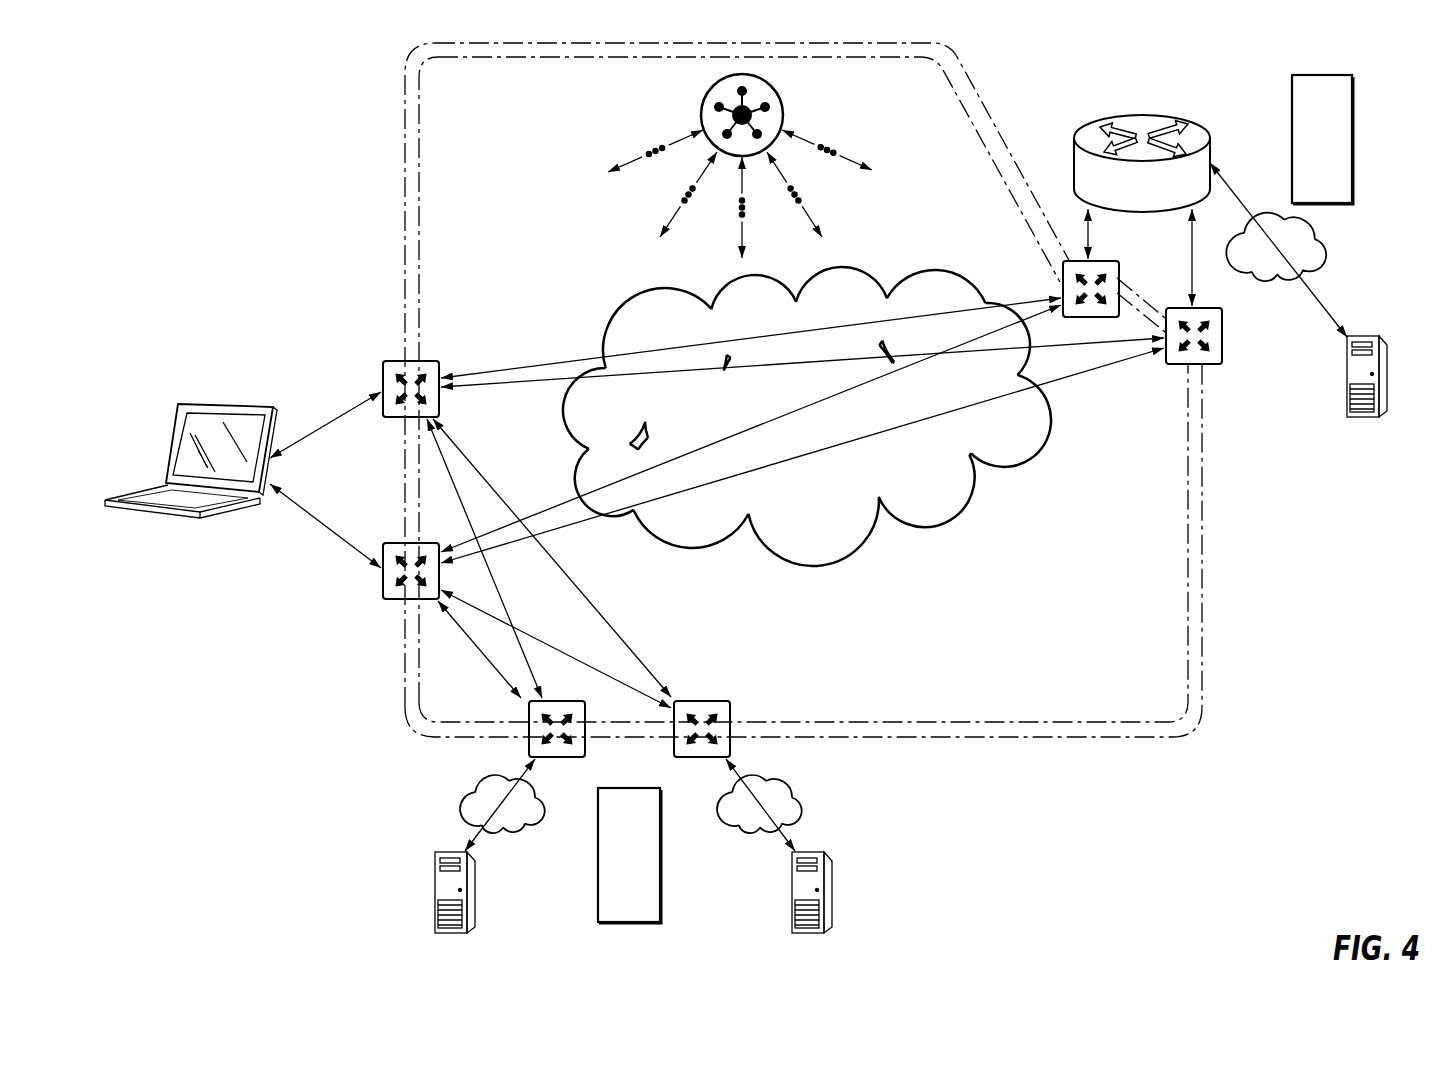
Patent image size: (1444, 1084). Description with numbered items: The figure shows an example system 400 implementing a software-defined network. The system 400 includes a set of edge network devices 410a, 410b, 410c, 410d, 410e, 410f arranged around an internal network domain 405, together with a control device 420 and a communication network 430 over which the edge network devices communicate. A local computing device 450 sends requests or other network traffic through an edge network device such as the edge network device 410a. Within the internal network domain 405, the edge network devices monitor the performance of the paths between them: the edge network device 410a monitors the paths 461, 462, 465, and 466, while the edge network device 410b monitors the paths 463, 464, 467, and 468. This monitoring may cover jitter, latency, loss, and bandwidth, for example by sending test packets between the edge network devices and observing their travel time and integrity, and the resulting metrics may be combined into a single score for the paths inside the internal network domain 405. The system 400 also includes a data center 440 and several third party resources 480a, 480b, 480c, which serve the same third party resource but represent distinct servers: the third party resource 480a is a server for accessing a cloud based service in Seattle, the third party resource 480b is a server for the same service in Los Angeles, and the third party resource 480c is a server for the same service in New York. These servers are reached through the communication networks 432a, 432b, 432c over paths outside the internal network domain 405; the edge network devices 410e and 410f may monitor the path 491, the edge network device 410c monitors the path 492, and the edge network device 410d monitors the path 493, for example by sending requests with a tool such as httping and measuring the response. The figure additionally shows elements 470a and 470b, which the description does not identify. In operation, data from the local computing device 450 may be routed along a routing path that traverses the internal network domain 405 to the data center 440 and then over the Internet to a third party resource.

The system 400 is at (266, 118).
The internal network domain 405 is at (982, 95).
The edge network device 410a is at (382, 372).
The edge network device 410b is at (382, 585).
The edge network device 410c is at (528, 716).
The edge network device 410d is at (730, 716).
The edge network device 410e is at (1062, 286).
The edge network device 410f is at (1220, 345).
The control device 420 is at (783, 104).
The communication network 430 is at (785, 512).
The communication network 432a is at (468, 800).
The communication network 432b is at (805, 798).
The communication network 432c is at (1333, 252).
The data center 440 is at (1126, 198).
The local computing device 450 is at (207, 403).
The path 461 is at (546, 365).
The path 462 is at (546, 384).
The path 463 is at (1048, 313).
The path 464 is at (1050, 382).
The path 465 is at (617, 632).
The path 466 is at (462, 512).
The path 467 is at (553, 648).
The path 468 is at (463, 636).
The data center 470a is at (609, 869).
The data center 470b is at (1302, 154).
The third party resource 480a is at (462, 852).
The third party resource 480b is at (812, 852).
The third party resource 480c is at (1364, 336).
The path 491 is at (1330, 320).
The path 492 is at (505, 833).
The path 493 is at (760, 833).